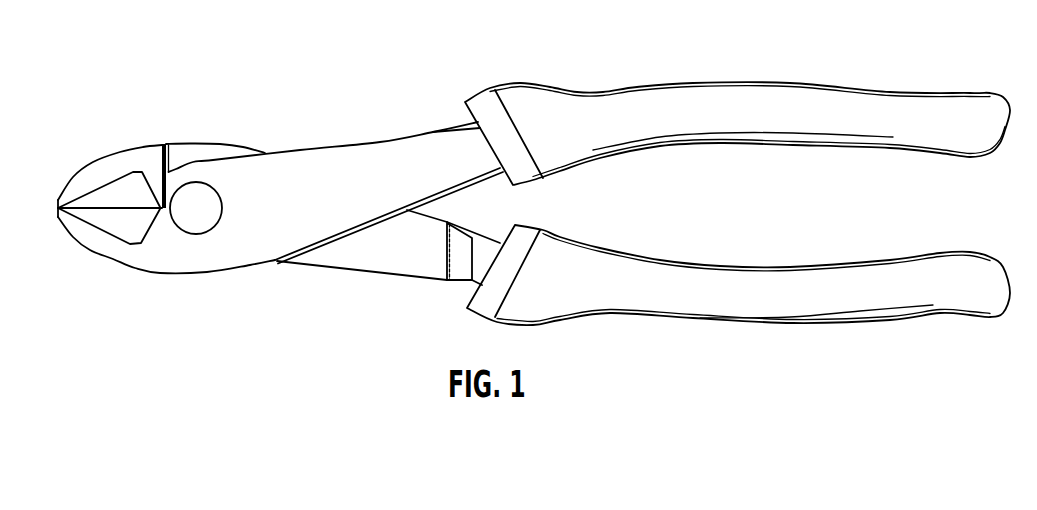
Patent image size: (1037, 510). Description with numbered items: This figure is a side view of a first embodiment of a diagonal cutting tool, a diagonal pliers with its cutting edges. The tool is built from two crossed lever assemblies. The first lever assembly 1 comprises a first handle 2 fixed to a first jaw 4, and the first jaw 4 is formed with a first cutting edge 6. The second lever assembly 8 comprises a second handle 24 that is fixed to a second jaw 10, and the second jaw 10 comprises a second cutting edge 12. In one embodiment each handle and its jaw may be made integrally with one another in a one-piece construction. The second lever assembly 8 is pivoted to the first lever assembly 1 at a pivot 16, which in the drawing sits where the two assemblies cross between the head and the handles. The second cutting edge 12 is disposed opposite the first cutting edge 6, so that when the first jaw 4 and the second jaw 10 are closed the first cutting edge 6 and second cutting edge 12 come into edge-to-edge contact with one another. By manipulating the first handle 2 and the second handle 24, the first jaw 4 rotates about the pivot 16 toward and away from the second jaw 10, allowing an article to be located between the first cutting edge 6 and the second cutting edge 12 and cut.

The first lever assembly 1 is at (620, 342).
The first handle 2 is at (582, 266).
The first jaw 4 is at (146, 143).
The first cutting edge 6 is at (97, 208).
The second lever assembly 8 is at (385, 115).
The second jaw 10 is at (167, 255).
The second cutting edge 12 is at (93, 210).
The pivot 16 is at (205, 208).
The second handle 24 is at (578, 110).